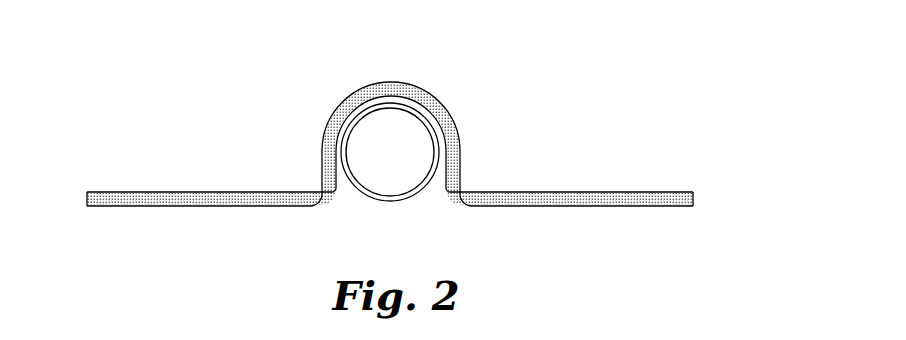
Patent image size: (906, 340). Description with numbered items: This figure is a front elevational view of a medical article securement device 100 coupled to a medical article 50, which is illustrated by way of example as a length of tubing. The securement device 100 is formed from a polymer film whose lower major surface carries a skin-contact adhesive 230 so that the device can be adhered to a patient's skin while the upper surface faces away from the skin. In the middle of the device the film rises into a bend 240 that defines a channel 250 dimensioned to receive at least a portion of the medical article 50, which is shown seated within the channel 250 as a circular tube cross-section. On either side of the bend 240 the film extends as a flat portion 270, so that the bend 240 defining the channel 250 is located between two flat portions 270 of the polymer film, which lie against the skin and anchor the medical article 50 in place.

The medical article securement device 100 is at (552, 87).
The skin-contact adhesive 230 is at (158, 206).
The bend 240 is at (403, 83).
The channel 250 is at (395, 143).
The medical article 50 is at (363, 201).
The flat portion 270 is at (90, 187).